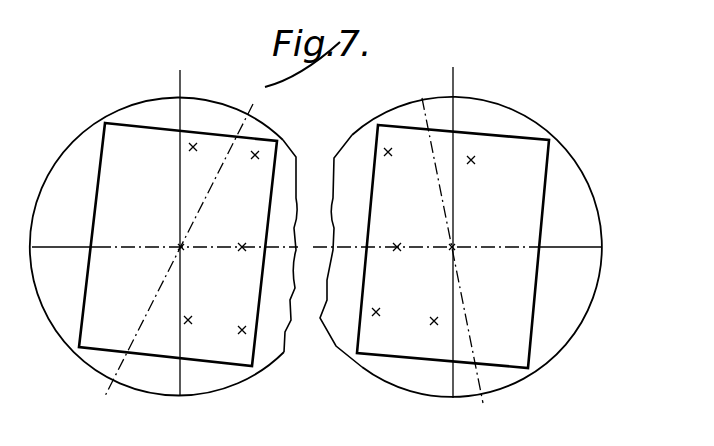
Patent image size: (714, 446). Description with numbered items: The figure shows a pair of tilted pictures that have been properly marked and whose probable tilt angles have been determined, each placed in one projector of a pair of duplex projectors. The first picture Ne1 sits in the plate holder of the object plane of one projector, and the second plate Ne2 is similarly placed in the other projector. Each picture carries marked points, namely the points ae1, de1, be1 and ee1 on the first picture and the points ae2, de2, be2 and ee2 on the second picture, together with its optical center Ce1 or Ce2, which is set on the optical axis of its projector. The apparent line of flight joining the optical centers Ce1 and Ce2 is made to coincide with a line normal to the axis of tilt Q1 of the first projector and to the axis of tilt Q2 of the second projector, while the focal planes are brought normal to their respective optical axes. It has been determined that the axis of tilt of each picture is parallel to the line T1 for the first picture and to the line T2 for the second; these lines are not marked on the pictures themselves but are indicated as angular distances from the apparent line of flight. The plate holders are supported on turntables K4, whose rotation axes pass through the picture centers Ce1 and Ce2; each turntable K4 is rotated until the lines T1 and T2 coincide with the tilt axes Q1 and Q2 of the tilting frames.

The turntable K4 is at (56, 162).
The picture Ne1 is at (133, 125).
The plate Ne2 is at (531, 138).
The line T1 is at (168, 256).
The line T2 is at (434, 93).
The axis of tilt Q1 is at (177, 377).
The axis of tilt Q2 is at (447, 386).
The optical center Ce1 is at (184, 249).
The optical center Ce2 is at (241, 246).
The reference point a of first plate ae1 is at (197, 147).
The reference point d of first plate de1 is at (254, 156).
The reference point b of first plate be1 is at (192, 320).
The reference point e of first plate ee1 is at (242, 332).
The reference point a of second plate ae2 is at (388, 154).
The reference point d of second plate de2 is at (472, 161).
The reference point b of second plate be2 is at (376, 313).
The reference point e of second plate ee2 is at (434, 323).